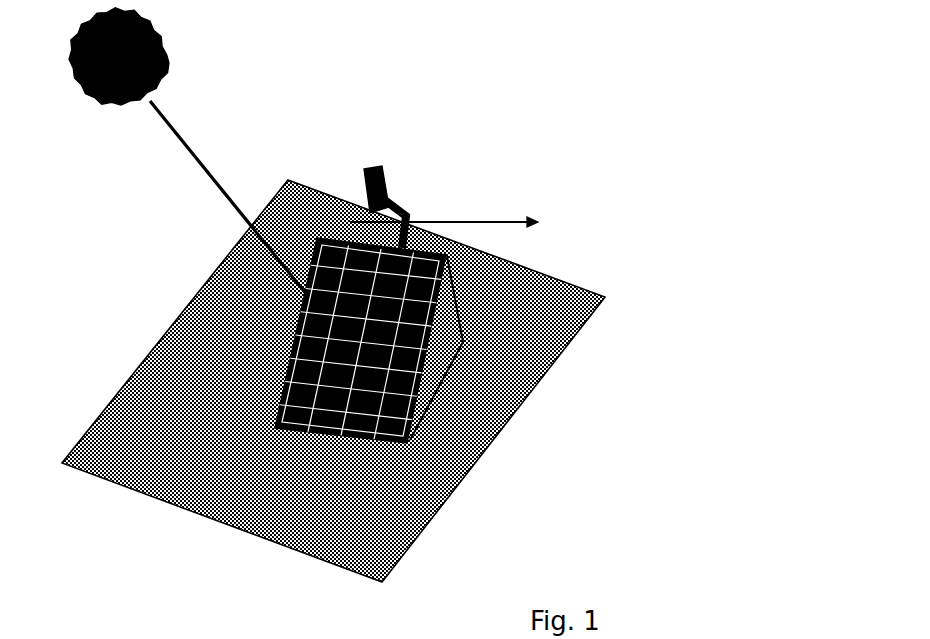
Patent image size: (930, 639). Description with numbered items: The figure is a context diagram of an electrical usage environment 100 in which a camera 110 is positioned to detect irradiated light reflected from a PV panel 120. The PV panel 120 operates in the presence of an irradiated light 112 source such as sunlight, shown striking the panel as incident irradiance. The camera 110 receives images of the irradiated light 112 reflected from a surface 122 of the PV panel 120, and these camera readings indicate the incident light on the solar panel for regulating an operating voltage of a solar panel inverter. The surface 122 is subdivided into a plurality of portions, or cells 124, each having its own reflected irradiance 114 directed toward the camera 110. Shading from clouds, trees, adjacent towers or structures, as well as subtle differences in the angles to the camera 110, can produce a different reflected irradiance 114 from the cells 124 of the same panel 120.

The electrical usage environment 100 is at (392, 60).
The camera 110 is at (376, 168).
The irradiated light 112 is at (183, 121).
The reflected irradiance 114 is at (342, 230).
The PV panel 120 is at (443, 280).
The surface 122 is at (288, 370).
The cells 124 is at (403, 433).